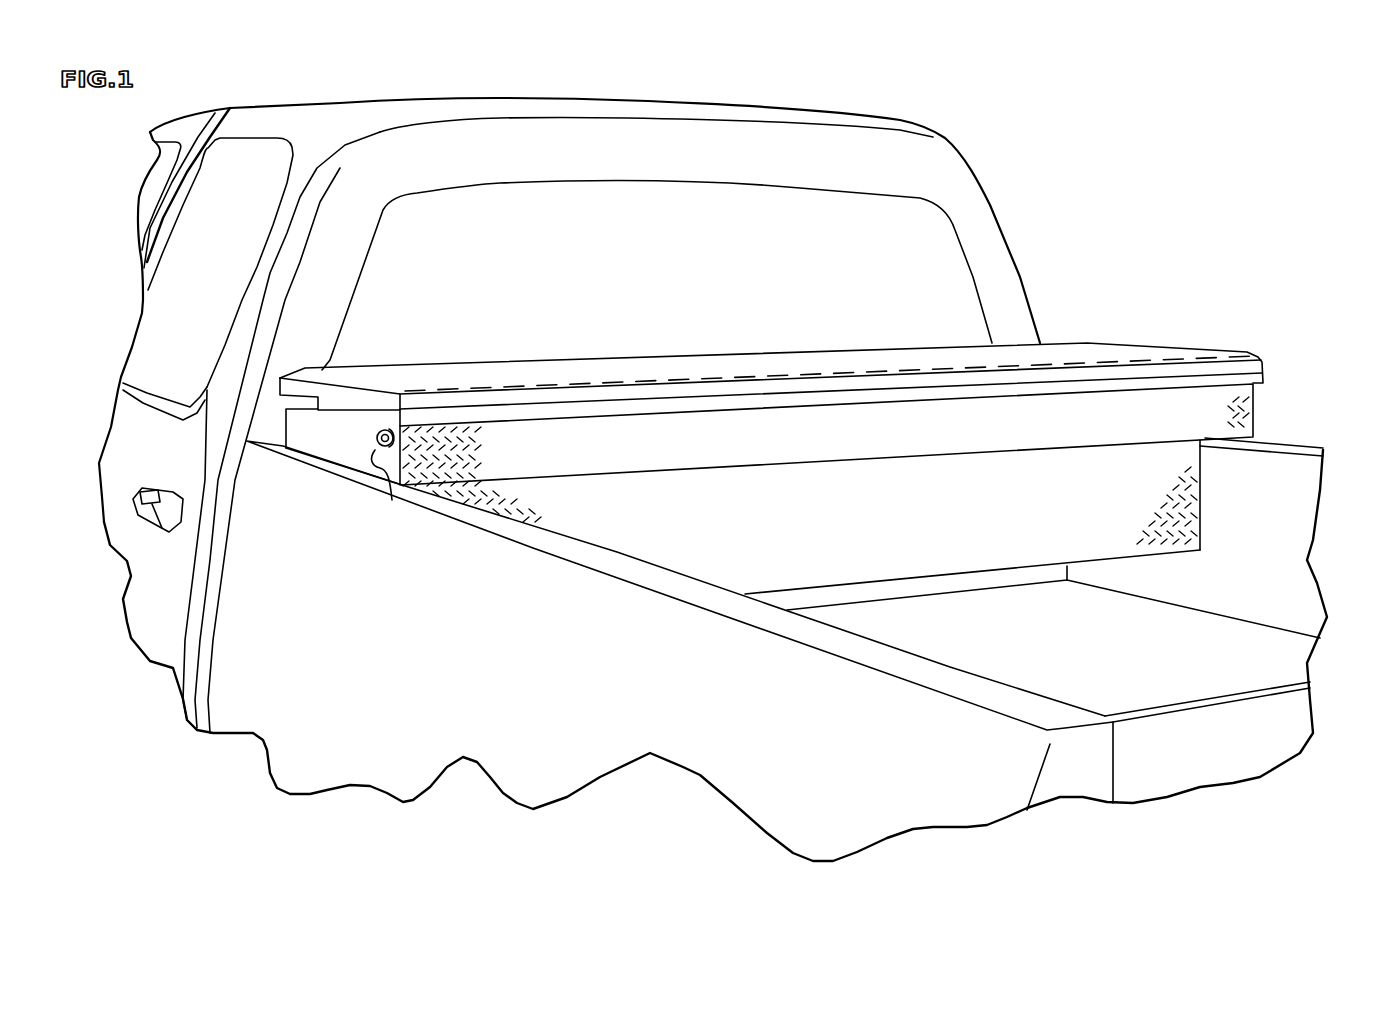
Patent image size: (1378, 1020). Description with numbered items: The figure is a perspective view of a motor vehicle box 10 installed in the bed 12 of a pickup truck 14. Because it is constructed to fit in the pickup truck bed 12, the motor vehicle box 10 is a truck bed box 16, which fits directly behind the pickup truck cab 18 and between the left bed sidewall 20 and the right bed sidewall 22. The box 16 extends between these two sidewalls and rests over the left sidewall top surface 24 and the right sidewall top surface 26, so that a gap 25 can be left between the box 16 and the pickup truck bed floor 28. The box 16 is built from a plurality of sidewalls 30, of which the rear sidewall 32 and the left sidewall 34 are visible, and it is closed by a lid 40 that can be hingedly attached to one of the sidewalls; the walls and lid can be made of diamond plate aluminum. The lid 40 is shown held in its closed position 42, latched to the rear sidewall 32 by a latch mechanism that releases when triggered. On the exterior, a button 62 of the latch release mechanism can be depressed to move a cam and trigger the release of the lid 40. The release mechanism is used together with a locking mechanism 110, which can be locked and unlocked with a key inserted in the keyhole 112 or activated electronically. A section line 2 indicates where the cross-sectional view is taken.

The section line 2- 2 is at (304, 410).
The motor vehicle box 10 is at (801, 394).
The bed 12 is at (804, 592).
The pickup truck 14 is at (1100, 150).
The truck bed box 16 is at (1097, 353).
The pickup truck cab 18 is at (700, 140).
The left bed sidewall 20 is at (564, 676).
The right bed sidewall 22 is at (1271, 528).
The left sidewall top surface 24 is at (685, 583).
The gap 25 is at (1043, 596).
The right sidewall top surface 26 is at (1253, 400).
The pickup truck bed floor 28 is at (1174, 673).
The sidewalls 30 is at (926, 525).
The rear sidewall 32 is at (847, 508).
The left sidewall 34 is at (352, 458).
The lid 40 is at (515, 372).
The closed position 42 is at (1110, 283).
The button 62 is at (376, 432).
The locking mechanism 110 is at (386, 478).
The keyhole 112 is at (376, 440).